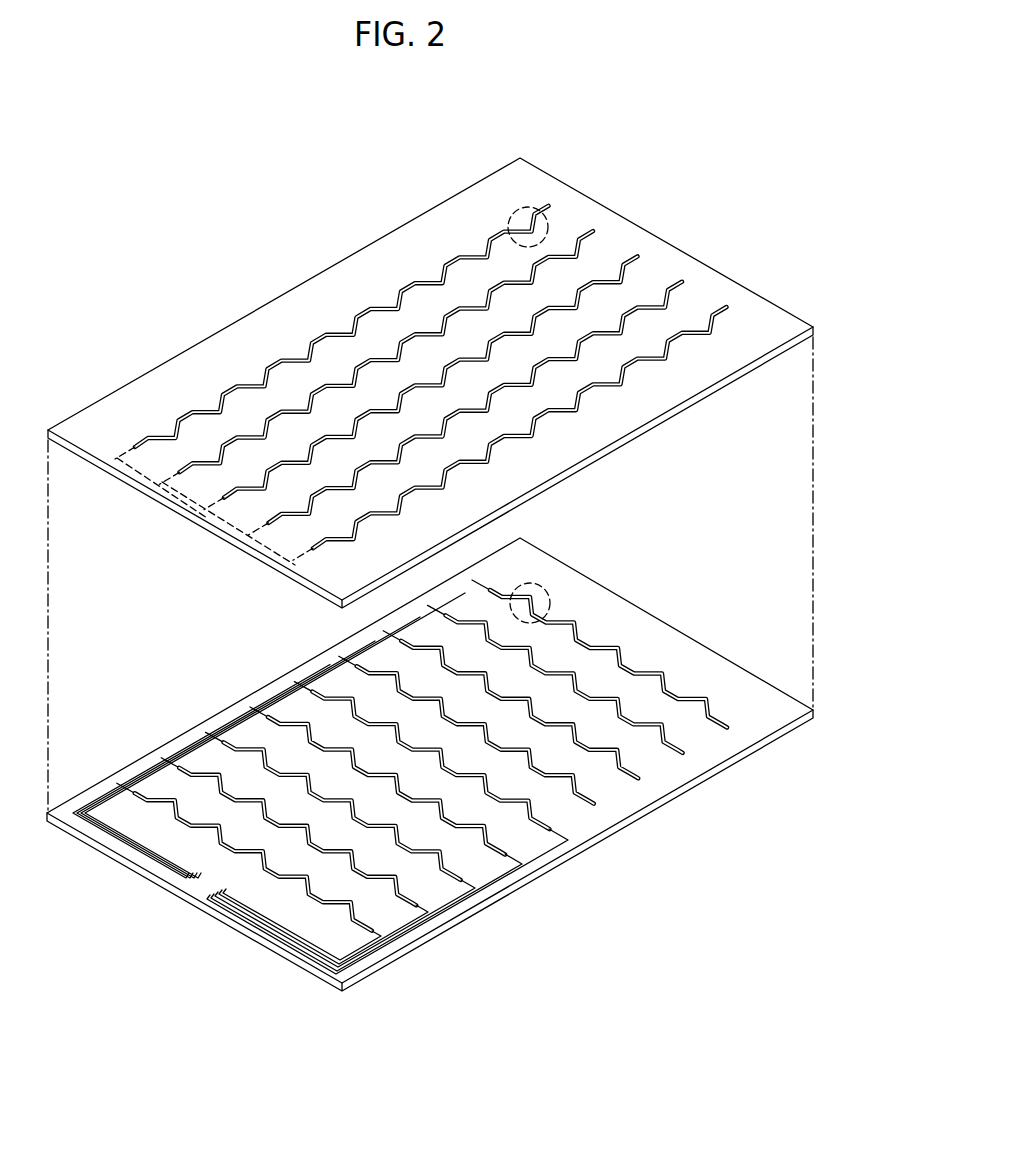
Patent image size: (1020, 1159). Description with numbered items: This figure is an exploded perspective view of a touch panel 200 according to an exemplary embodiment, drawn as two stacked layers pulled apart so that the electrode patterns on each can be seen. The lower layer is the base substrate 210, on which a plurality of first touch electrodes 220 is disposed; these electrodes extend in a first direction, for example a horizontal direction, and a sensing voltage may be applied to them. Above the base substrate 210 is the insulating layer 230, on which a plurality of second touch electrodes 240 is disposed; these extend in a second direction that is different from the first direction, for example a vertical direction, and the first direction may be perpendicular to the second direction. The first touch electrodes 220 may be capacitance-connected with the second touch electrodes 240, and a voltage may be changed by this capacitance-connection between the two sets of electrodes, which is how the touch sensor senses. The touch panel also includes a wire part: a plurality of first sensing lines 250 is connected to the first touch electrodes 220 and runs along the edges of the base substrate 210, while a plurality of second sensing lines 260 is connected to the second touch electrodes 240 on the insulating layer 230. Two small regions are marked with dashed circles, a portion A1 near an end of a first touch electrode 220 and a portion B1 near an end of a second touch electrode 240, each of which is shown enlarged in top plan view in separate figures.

The touch sensor 200 is at (640, 166).
The base substrate 210 is at (680, 798).
The first touch electrodes 220 is at (672, 690).
The insulating layer 230 is at (742, 281).
The second touch electrodes 240 is at (680, 286).
The first sensing lines 250 is at (400, 940).
The second sensing lines 260 is at (120, 447).
The portion A1 is at (549, 596).
The portion B1 is at (511, 226).